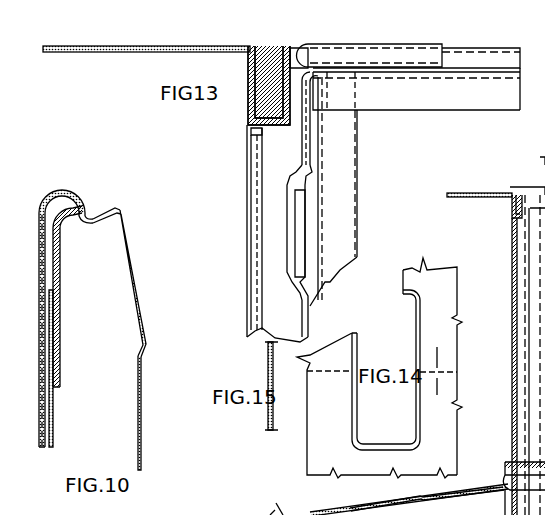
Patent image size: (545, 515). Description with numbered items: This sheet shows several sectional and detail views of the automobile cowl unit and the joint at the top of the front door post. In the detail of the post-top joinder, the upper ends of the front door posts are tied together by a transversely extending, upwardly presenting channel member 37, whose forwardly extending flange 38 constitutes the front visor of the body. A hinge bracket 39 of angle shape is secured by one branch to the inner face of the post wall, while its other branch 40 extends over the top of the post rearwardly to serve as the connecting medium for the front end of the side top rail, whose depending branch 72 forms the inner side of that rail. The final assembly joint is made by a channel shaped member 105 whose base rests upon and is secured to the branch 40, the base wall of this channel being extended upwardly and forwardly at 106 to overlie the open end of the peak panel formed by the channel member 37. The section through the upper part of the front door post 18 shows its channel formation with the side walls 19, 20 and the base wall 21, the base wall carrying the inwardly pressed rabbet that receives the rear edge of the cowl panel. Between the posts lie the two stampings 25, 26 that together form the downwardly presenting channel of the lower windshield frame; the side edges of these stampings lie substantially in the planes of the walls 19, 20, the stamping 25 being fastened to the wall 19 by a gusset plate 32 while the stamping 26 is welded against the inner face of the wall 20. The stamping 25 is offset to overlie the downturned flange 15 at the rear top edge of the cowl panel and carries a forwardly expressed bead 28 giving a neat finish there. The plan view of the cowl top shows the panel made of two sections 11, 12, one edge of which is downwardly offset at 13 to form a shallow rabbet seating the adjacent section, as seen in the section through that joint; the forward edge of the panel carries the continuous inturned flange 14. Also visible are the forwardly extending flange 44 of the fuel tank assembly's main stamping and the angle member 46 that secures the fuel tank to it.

In FIG. 13, the forwardly extending flange 38 is at (94, 30).
In FIG. 14, the forwardly extending flange 38 is at (470, 193).
In FIG. 13, the channel member 37 is at (262, 73).
In FIG. 14, the channel member 37 is at (512, 208).
In FIG. 13, the upwardly and forwardly extended base wall 106 is at (253, 47).
In FIG. 13, the channel shaped member 105 is at (398, 32).
In FIG. 13, the branch of hinge bracket 40 is at (420, 72).
In FIG. 13, the depending branch of top rail 72 is at (485, 100).
In FIG. 13, the hinge bracket 39 is at (308, 170).
In FIG. 10, the side wall 19 is at (57, 243).
In FIG. 10, the base wall 21 is at (90, 218).
In FIG. 10, the side wall 20 is at (124, 242).
In FIG. 10, the front door post 18 is at (128, 243).
In FIG. 10, the stamping 26 is at (142, 380).
In FIG. 10, the gusset plate 32 is at (62, 313).
In FIG. 10, the stamping 25 is at (58, 406).
In FIG. 14, the stamping 25 is at (507, 482).
In FIG. 15, the downwardly offset edge 13 is at (273, 380).
In FIG. 14, the cowl panel section 12 is at (438, 428).
In FIG. 14, the cowl panel section 11 is at (440, 289).
In FIG. 14, the downturned flange 15 is at (440, 347).
In FIG. 14, the bead 28 is at (475, 498).
In FIG. 14, the inturned flange 14 is at (304, 514).
In FIG. 14, the forwardly extending flange 44 is at (270, 499).
In FIG. 14, the angle member 46 is at (260, 508).